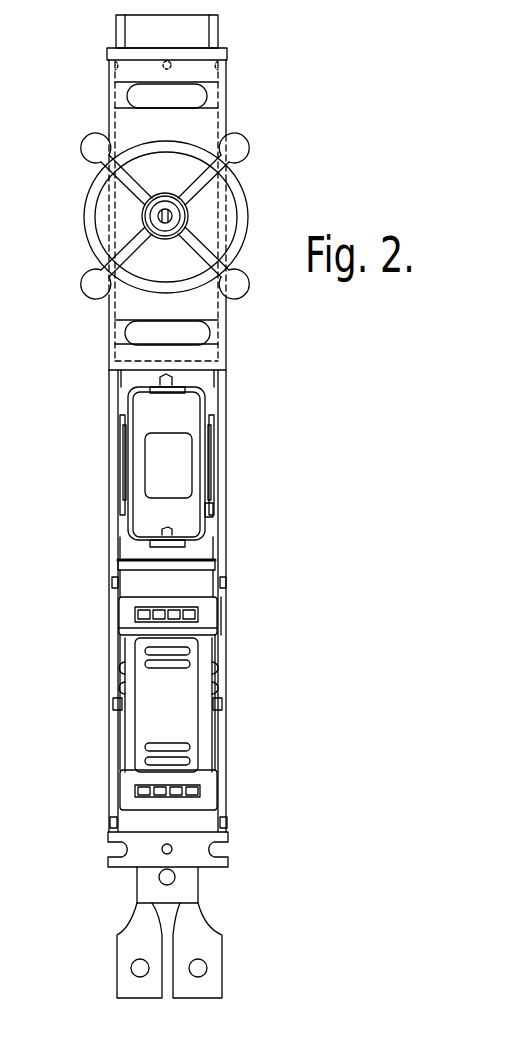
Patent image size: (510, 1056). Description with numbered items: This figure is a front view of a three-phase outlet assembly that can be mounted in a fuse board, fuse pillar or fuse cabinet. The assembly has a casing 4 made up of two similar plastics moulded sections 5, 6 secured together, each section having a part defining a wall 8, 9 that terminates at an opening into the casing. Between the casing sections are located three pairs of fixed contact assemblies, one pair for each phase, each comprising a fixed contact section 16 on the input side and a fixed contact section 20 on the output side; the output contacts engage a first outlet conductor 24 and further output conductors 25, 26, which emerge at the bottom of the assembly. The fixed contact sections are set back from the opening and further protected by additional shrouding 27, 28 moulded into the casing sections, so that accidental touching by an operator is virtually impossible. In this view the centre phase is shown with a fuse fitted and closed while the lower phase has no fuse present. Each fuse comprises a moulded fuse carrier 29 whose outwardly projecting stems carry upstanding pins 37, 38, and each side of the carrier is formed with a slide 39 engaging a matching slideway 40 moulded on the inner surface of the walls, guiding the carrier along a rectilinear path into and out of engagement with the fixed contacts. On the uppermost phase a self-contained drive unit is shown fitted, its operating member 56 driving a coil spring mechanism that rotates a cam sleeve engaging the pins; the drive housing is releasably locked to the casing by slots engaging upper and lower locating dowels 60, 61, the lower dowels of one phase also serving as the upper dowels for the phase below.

The casing 4 is at (103, 555).
The operating member 56 is at (237, 148).
The upstanding pin 38 is at (172, 378).
The slide 39 is at (212, 445).
The fuse carrier 29 is at (196, 449).
The slideway 40 is at (200, 518).
The upstanding pin 37 is at (174, 531).
The upper locating dowel 60 is at (224, 580).
The casing section 6 is at (118, 613).
The fixed contact section 16 is at (198, 612).
The casing section 5 is at (223, 618).
The shrouding 27 is at (203, 630).
The wall 8 is at (222, 692).
The wall 9 is at (112, 690).
The shrouding 28 is at (205, 778).
The fixed contact section 20 is at (200, 792).
The lower locating dowel 61 is at (111, 822).
The first outlet conductor 24 is at (188, 888).
The output conductor 25 is at (122, 982).
The output conductor 26 is at (215, 982).